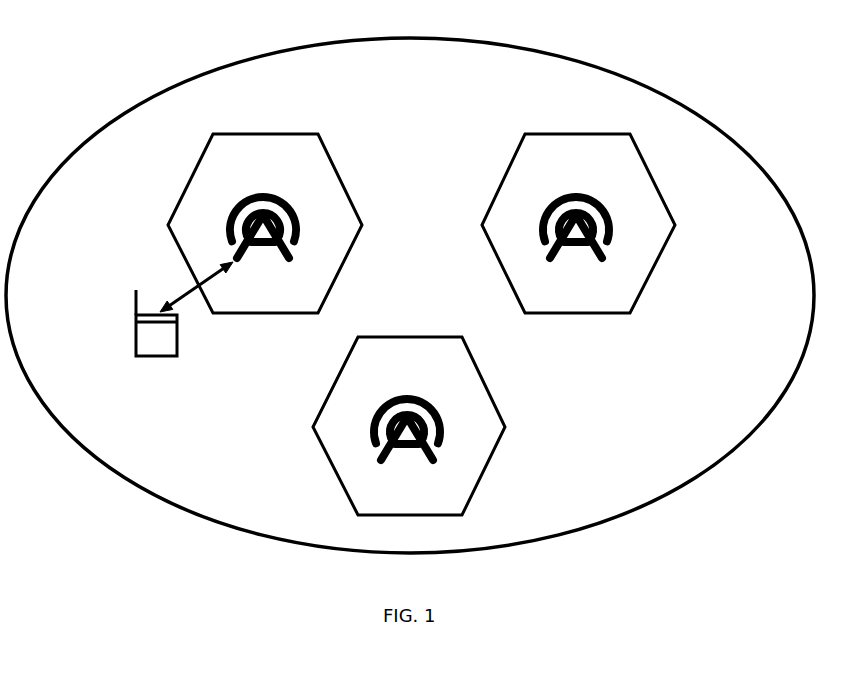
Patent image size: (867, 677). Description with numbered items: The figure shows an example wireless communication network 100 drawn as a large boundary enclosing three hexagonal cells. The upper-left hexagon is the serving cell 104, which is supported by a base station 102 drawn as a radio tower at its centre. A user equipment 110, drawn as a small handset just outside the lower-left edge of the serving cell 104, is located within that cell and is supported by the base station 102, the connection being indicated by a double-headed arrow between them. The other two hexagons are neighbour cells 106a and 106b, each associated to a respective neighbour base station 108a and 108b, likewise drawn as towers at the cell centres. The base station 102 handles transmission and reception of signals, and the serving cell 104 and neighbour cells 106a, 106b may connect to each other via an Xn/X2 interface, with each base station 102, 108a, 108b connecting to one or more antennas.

The wireless communication network 100 is at (248, 57).
The base station 102 is at (290, 258).
The serving cell 104 is at (175, 212).
The neighbour cell 106a is at (502, 185).
The neighbour cell 106b is at (315, 430).
The neighbour base station 108a is at (603, 258).
The neighbour base station 108b is at (435, 460).
The user equipment 110 is at (158, 357).